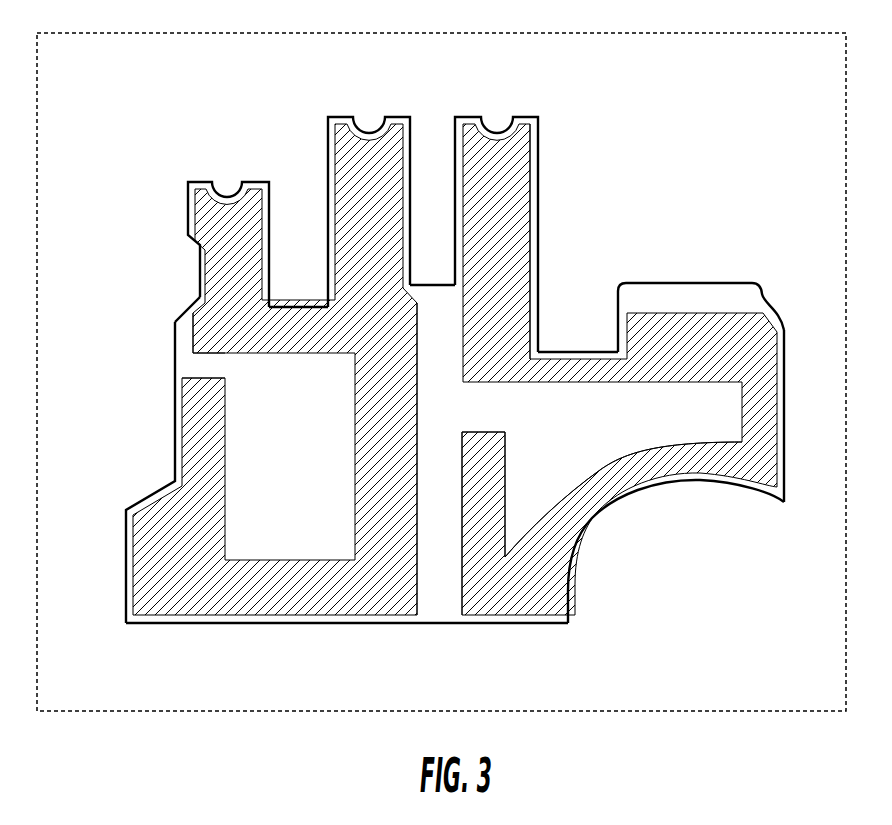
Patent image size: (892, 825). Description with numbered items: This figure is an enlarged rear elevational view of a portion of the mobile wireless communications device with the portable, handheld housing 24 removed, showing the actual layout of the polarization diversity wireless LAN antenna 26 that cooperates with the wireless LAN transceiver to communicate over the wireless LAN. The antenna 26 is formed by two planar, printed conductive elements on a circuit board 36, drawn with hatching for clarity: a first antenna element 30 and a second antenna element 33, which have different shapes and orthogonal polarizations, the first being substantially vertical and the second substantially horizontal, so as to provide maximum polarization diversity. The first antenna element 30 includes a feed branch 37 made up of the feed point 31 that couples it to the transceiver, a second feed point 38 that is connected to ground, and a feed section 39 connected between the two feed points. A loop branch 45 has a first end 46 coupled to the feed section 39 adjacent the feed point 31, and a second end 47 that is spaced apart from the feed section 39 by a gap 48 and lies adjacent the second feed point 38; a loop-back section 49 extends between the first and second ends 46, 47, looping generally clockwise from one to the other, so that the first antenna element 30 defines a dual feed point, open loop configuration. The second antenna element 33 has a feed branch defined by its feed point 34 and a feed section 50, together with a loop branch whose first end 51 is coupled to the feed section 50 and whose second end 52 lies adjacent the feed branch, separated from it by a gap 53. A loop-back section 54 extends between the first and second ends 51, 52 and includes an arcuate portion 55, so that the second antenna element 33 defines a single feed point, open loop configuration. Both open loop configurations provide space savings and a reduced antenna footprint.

The portable, handheld housing 24 is at (441, 392).
The polarization diversity wireless LAN antenna 26 is at (695, 117).
The first antenna element 30 is at (455, 411).
The feed point 31 is at (369, 183).
The second antenna element 33 is at (713, 287).
The feed point 34 is at (496, 206).
The circuit board 36 is at (672, 551).
The feed branch 37 is at (130, 261).
The second feed point 38 is at (228, 209).
The feed section 39 is at (298, 270).
The loop branch 45 is at (115, 472).
The first end 46 is at (432, 265).
The second end 47 is at (167, 379).
The gap 48 is at (168, 320).
The loop-back section 49 is at (347, 645).
The feed section 50 is at (564, 241).
The first end 51 is at (578, 321).
The second end 52 is at (516, 502).
The gap 53 is at (442, 492).
The loop-back section 54 is at (799, 416).
The arcuate portion 55 is at (623, 499).